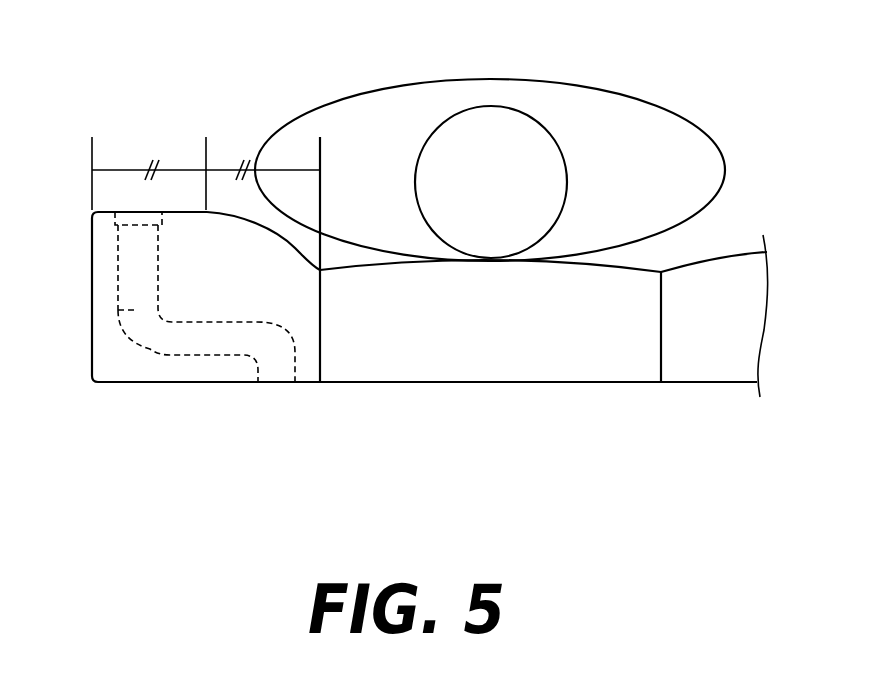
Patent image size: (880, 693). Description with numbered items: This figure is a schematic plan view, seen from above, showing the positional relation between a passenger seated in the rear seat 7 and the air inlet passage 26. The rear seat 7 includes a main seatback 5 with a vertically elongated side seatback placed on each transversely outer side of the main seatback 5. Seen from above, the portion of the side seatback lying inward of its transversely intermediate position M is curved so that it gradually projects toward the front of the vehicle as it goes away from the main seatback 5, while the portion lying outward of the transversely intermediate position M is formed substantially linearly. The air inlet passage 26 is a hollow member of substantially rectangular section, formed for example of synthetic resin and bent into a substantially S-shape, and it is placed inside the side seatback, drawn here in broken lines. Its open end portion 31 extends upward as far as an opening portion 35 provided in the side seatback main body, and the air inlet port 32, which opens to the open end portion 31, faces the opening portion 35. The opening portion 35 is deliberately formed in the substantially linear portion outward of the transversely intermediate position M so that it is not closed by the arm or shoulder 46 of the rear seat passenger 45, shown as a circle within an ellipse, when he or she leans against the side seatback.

The main seatback 5 is at (485, 363).
The rear seat 7 is at (548, 380).
The air inlet passage 26 is at (123, 310).
The open end portion 31 is at (117, 270).
The air inlet port 32 is at (137, 238).
The opening portion 35 is at (129, 212).
The rear seat passenger 45 is at (492, 128).
The arm or shoulder 46 is at (293, 145).
The transversely intermediate position M is at (208, 210).